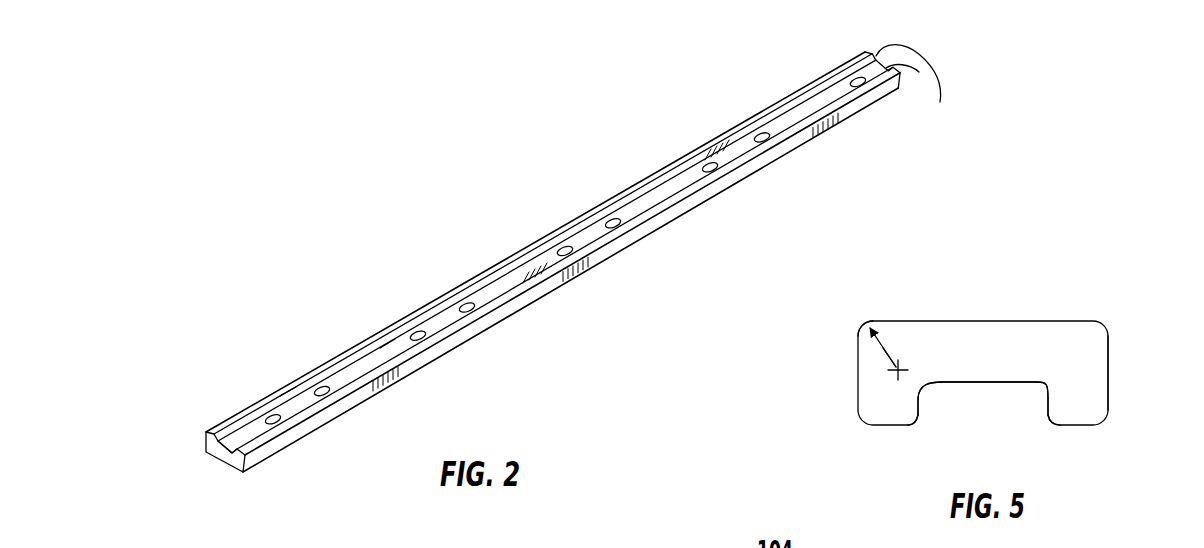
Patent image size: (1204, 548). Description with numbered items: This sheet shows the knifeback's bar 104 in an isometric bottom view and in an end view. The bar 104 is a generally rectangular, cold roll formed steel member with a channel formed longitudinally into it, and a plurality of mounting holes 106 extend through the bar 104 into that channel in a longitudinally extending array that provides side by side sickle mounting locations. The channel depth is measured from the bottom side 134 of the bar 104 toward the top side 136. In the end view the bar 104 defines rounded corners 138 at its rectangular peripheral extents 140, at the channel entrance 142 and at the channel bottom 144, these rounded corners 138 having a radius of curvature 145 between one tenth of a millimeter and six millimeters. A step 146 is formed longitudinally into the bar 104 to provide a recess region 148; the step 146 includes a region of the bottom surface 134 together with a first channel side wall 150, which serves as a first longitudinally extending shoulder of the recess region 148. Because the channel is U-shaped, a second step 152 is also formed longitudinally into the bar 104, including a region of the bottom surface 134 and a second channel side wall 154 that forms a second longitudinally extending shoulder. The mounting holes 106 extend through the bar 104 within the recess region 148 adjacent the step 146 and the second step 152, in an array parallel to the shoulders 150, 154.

In FIG. 5, the bar 104 is at (1064, 291).
In FIG. 2, the mounting holes 106 is at (711, 160).
In FIG. 2, the bottom side 134 is at (818, 84).
In FIG. 2, the top side 136 is at (343, 408).
In FIG. 5, the rounded corners 138 is at (1108, 330).
In FIG. 2, the rectangular peripheral extents 140 is at (916, 93).
In FIG. 5, the rectangular peripheral extents 140 is at (863, 323).
In FIG. 5, the channel entrance 142 is at (964, 408).
In FIG. 5, the channel bottom 144 is at (953, 381).
In FIG. 5, the radius of curvature 145 is at (890, 352).
In FIG. 2, the step 146 is at (631, 200).
In FIG. 5, the step 146 is at (915, 418).
In FIG. 2, the recess region 148 is at (388, 357).
In FIG. 5, the recess region 148 is at (1015, 400).
In FIG. 2, the first channel side wall 150 is at (288, 398).
In FIG. 5, the first channel side wall 150 is at (918, 405).
In FIG. 2, the second step 152 is at (463, 324).
In FIG. 5, the second step 152 is at (1053, 418).
In FIG. 2, the second channel side wall 154 is at (233, 452).
In FIG. 5, the second channel side wall 154 is at (1052, 403).